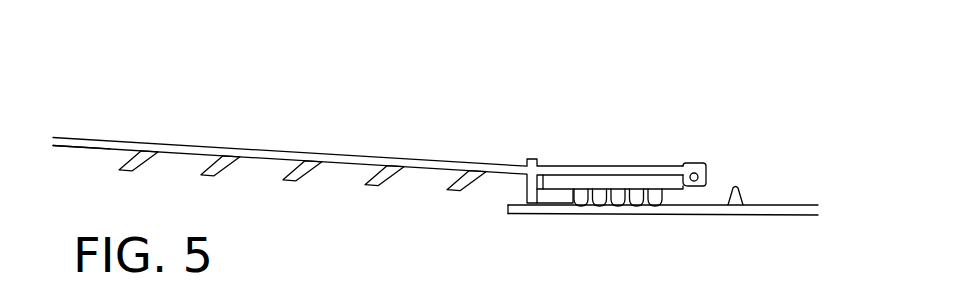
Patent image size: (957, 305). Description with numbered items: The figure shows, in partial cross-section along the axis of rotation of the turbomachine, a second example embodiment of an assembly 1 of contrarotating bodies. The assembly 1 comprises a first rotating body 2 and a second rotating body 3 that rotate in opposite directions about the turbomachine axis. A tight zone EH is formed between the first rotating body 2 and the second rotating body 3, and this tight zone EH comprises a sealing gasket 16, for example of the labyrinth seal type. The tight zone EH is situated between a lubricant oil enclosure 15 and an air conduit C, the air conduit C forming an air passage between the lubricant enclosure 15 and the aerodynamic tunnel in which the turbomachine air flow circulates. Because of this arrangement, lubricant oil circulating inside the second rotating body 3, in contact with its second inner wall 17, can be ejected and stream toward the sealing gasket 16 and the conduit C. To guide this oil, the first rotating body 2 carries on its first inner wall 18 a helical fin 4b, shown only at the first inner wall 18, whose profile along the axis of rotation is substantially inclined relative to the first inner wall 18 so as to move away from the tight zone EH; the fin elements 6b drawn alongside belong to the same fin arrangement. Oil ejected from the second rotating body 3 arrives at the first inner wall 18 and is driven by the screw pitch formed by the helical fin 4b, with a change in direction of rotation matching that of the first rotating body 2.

The assembly 1 is at (476, 80).
The first rotating body 2 is at (289, 151).
The second rotating body 3 is at (787, 216).
The helical fin 4b is at (375, 186).
The fin 6b is at (293, 182).
The lubricant oil enclosure 15 is at (645, 272).
The sealing gasket 16 is at (595, 190).
The second inner wall 17 is at (658, 216).
The first inner wall 18 is at (103, 153).
The air conduit C is at (398, 138).
The tight zone EH is at (618, 127).